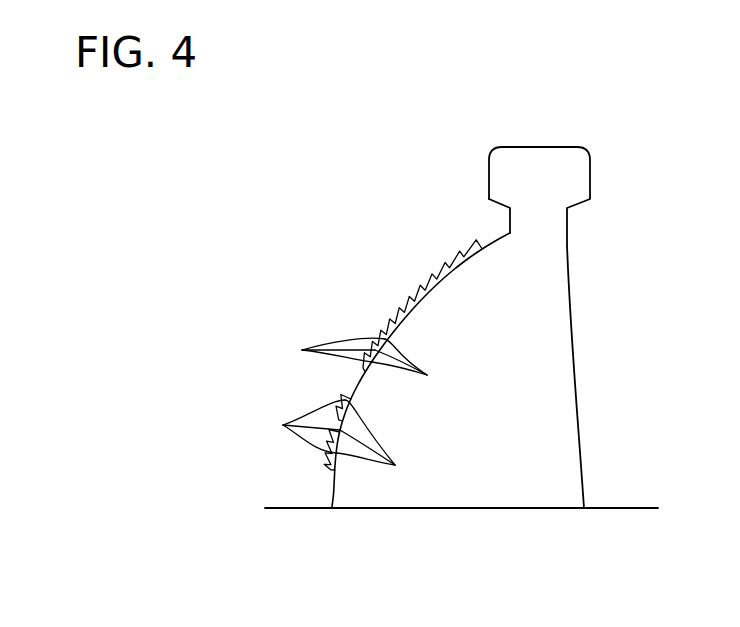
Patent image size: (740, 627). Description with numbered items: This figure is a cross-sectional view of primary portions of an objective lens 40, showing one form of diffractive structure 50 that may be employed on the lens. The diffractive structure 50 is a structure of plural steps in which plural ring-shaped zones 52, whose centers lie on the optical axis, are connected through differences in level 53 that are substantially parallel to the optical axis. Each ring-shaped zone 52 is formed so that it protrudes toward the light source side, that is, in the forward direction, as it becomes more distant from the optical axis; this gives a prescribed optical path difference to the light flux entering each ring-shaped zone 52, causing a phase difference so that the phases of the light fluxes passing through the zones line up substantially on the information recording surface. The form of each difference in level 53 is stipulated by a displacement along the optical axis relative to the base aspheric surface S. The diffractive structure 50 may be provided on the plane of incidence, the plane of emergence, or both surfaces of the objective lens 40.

The objective lens 40 is at (566, 165).
The diffractive structure 50 is at (405, 288).
The base aspheric surface S is at (444, 279).
The ring-shaped zone 52 is at (320, 395).
The difference in level 53 is at (397, 408).
The rail base line I is at (462, 509).